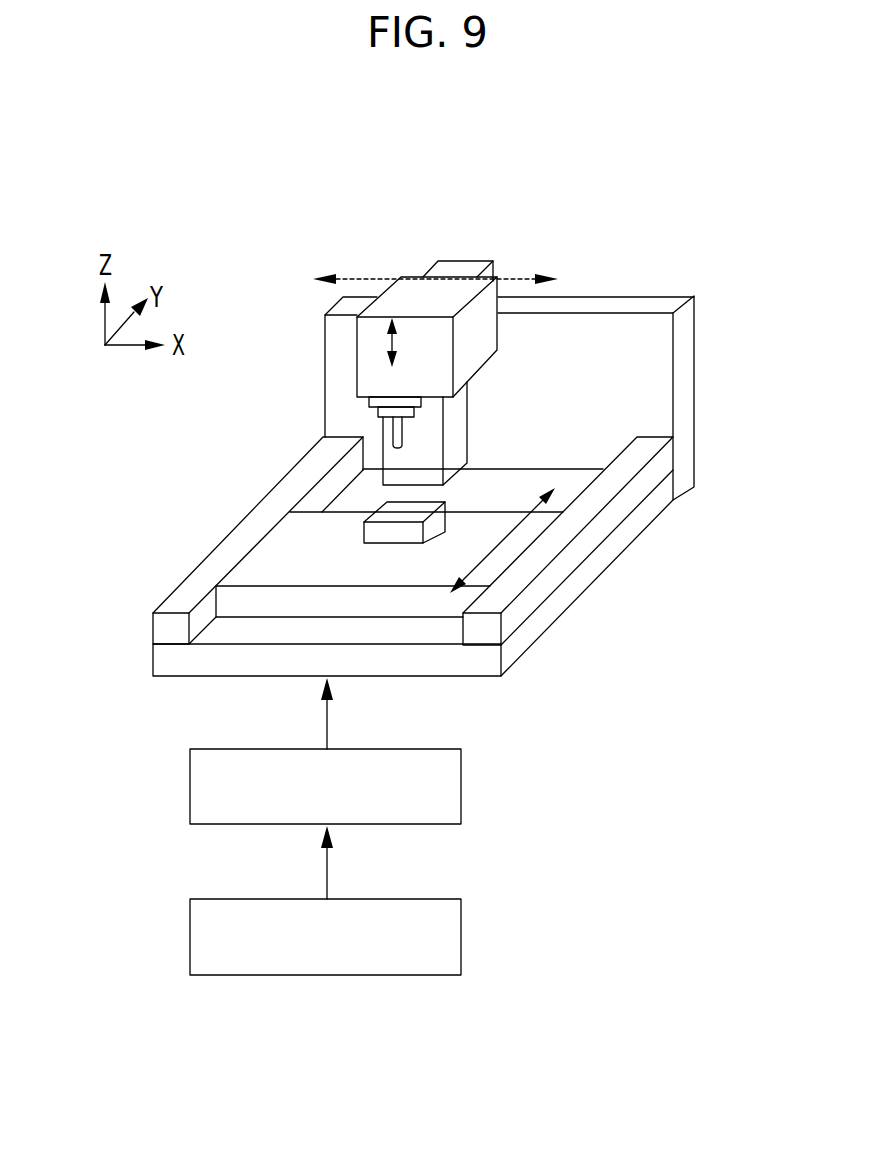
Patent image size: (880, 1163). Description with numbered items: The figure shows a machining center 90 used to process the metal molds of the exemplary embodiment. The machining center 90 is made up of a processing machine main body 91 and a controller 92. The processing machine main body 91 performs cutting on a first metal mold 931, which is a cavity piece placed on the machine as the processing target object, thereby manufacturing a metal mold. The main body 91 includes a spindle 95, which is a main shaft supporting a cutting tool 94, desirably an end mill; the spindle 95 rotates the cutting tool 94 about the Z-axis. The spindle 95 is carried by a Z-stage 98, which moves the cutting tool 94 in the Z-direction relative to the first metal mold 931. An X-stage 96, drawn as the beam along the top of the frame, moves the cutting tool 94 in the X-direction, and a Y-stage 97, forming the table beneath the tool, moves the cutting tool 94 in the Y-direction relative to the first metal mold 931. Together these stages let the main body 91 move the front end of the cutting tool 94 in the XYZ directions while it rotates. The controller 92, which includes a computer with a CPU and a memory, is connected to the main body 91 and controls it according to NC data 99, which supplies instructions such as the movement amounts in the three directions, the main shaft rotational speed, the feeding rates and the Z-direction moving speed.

The machining center 90 is at (466, 182).
The processing machine main body 91 is at (640, 266).
The controller 92 is at (461, 786).
The cutting tool 94 is at (403, 428).
The spindle 95 is at (380, 415).
The X-stage 96 is at (577, 307).
The Y-stage 97 is at (272, 557).
The Z-stage 98 is at (357, 350).
The NC data 99 is at (461, 935).
The first metal mold (cavity piece) 931 is at (370, 531).